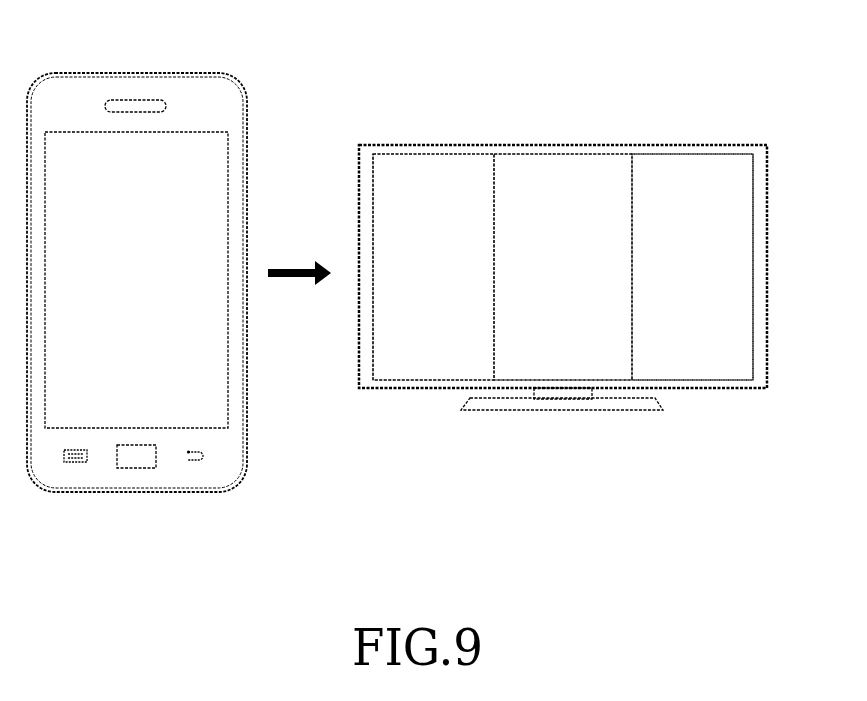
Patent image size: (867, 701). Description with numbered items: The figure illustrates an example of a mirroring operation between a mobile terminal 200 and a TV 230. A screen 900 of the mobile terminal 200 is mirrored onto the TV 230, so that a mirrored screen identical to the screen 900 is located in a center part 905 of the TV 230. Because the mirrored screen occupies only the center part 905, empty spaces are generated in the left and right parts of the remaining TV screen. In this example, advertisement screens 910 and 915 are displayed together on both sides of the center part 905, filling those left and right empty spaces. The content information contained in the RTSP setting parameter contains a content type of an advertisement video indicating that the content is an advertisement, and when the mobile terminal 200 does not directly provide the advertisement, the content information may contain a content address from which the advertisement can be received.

The mobile terminal 200 is at (135, 73).
The screen of the mobile terminal 900 is at (218, 177).
The TV 230 is at (767, 270).
The advertisement screen 910 is at (428, 162).
The center part of the TV (mirrored screen) 905 is at (561, 162).
The advertisement screen 915 is at (697, 162).